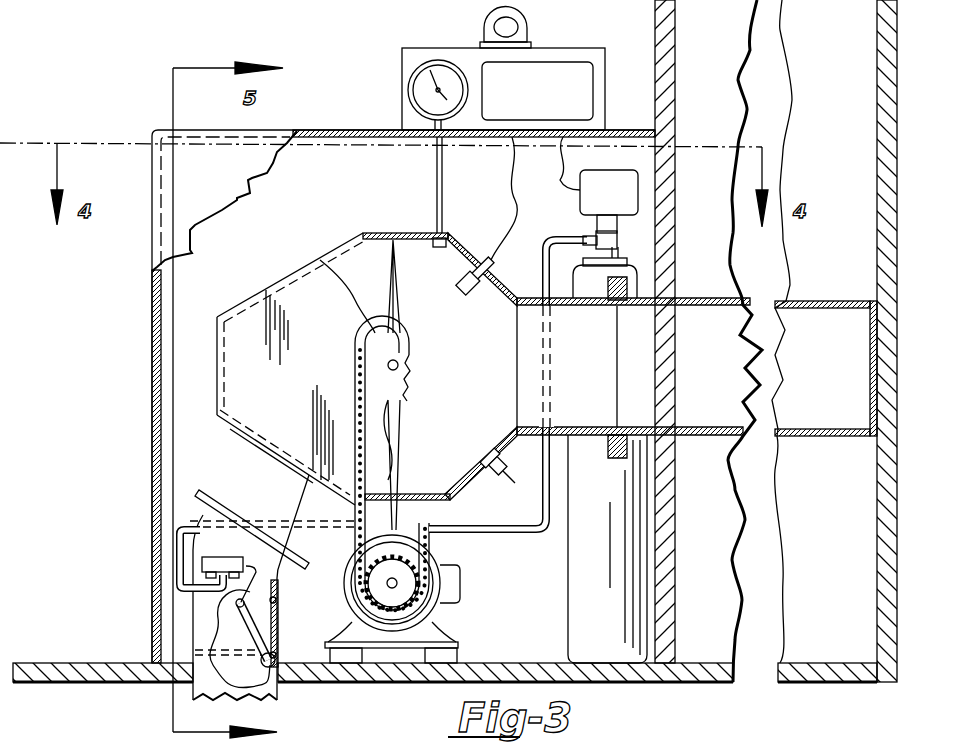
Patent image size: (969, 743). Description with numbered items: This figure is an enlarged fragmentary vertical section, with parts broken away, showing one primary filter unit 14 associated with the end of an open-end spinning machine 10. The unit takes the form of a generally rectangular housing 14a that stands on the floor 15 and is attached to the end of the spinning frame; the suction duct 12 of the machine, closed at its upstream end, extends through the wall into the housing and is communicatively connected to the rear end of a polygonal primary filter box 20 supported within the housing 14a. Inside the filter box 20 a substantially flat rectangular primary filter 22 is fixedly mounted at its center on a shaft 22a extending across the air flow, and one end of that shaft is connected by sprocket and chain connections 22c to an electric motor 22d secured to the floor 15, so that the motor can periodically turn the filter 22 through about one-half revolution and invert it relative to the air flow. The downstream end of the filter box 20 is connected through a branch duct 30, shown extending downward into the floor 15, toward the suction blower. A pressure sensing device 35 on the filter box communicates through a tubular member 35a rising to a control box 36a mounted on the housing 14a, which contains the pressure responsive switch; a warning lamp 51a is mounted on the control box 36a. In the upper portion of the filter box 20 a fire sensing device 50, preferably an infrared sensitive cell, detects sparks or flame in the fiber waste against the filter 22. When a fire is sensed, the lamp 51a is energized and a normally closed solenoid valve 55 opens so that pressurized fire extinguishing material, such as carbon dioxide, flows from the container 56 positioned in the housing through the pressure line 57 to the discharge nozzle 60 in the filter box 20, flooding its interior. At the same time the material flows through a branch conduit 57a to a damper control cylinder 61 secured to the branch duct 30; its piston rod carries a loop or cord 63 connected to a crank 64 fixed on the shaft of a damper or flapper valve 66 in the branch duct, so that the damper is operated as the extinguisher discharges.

The open-end spinning machine 10 is at (655, 30).
The suction duct 12 is at (733, 298).
The primary filter unit 14 is at (268, 125).
The housing 14a is at (376, 131).
The floor 15 is at (106, 671).
The primary filter box 20 is at (413, 232).
The primary filter 22 is at (398, 307).
The shaft 22a is at (398, 365).
The sprocket and chain connections 22c is at (367, 513).
The electric motor 22d is at (460, 622).
The branch duct 30 is at (227, 482).
The pressure sensing device 35 is at (448, 240).
The tubular member 35a is at (437, 163).
The control box 36a is at (454, 48).
The fire sensing device 50 is at (463, 292).
The lamp 51a is at (515, 20).
The solenoid valve 55 is at (620, 236).
The container 56 is at (584, 641).
The pressure line 57 is at (578, 232).
The branch conduit 57a is at (493, 533).
The discharge nozzle 60 is at (478, 456).
The cylinder 61 is at (198, 562).
The loop or cord 63 is at (278, 572).
The crank 64 is at (258, 635).
The damper or flapper valve 66 is at (273, 601).